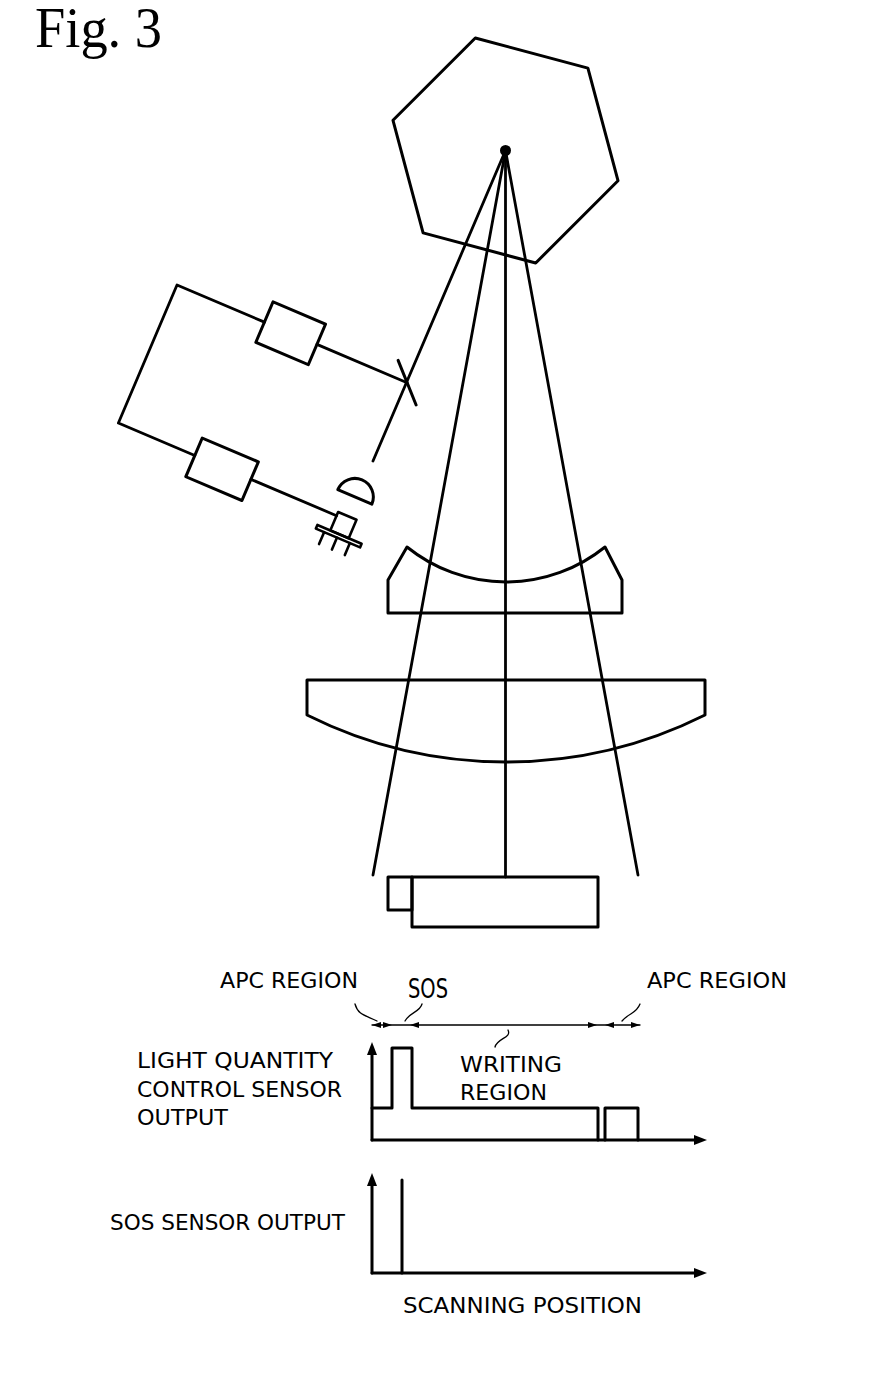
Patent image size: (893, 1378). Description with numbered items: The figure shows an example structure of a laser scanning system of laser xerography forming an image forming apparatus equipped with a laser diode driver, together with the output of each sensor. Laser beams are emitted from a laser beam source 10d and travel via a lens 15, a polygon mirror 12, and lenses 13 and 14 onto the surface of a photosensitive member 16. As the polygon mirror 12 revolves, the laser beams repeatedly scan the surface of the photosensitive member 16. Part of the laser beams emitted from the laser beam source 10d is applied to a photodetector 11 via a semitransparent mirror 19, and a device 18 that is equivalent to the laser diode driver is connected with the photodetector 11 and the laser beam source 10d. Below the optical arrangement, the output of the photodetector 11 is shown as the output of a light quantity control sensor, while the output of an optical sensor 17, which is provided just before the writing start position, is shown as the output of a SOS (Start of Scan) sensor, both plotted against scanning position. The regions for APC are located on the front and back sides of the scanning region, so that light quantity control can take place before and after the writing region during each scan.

The laser beam source 10d is at (316, 526).
The photodetector 11 is at (297, 312).
The polygon mirror 12 is at (578, 221).
The lens 13 is at (623, 597).
The lens 14 is at (675, 742).
The lens 15 is at (343, 481).
The photosensitive member 16 is at (600, 903).
The optical sensor 17 is at (388, 892).
The device equivalent to the laser diode driver 18 is at (212, 490).
The semitransparent mirror 19 is at (398, 360).